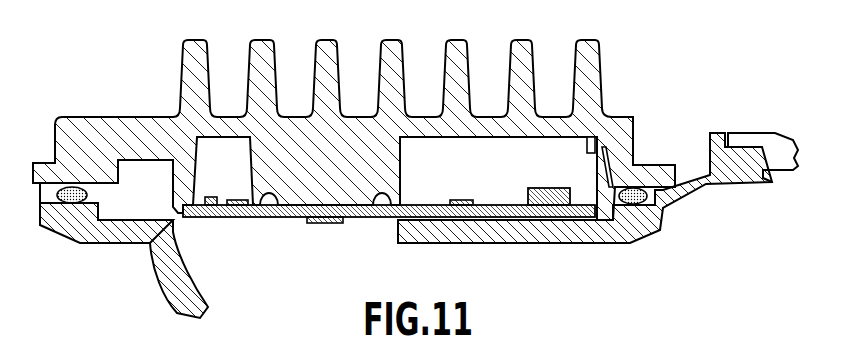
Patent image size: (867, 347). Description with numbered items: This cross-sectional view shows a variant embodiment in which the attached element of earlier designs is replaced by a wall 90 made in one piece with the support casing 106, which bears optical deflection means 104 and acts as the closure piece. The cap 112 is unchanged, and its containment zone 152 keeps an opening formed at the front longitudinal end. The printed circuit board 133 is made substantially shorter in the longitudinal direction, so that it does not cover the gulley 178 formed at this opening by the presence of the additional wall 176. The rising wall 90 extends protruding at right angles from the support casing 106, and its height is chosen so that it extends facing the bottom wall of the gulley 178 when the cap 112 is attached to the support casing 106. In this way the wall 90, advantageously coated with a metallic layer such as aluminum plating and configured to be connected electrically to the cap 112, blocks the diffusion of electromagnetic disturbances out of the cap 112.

The cap 112 is at (128, 111).
The containment zone 152 is at (482, 164).
The additional wall 176 is at (585, 148).
The gulley 178 is at (613, 149).
The support casing 106 is at (545, 240).
The optical deflection means 104 is at (167, 283).
The printed circuit board 133 is at (294, 219).
The wall 90 is at (600, 178).